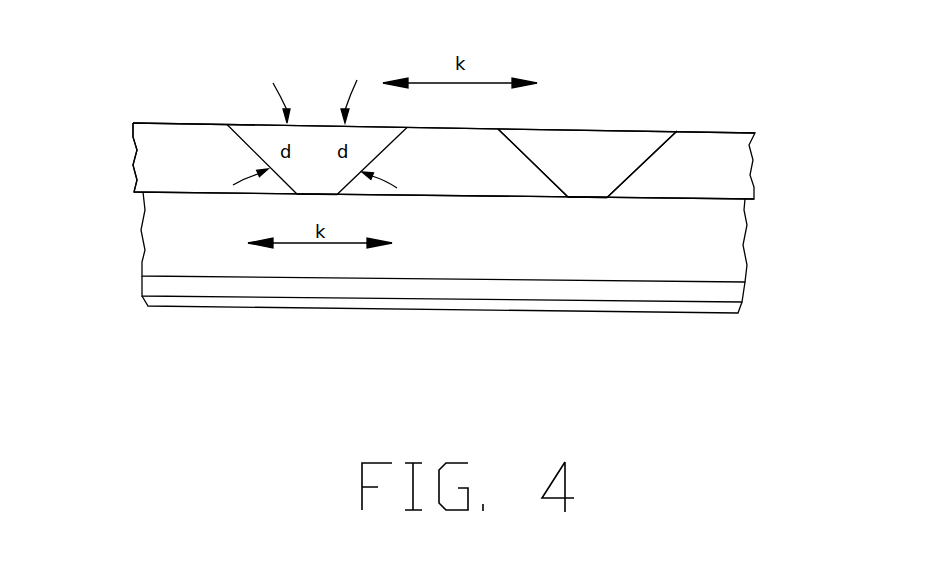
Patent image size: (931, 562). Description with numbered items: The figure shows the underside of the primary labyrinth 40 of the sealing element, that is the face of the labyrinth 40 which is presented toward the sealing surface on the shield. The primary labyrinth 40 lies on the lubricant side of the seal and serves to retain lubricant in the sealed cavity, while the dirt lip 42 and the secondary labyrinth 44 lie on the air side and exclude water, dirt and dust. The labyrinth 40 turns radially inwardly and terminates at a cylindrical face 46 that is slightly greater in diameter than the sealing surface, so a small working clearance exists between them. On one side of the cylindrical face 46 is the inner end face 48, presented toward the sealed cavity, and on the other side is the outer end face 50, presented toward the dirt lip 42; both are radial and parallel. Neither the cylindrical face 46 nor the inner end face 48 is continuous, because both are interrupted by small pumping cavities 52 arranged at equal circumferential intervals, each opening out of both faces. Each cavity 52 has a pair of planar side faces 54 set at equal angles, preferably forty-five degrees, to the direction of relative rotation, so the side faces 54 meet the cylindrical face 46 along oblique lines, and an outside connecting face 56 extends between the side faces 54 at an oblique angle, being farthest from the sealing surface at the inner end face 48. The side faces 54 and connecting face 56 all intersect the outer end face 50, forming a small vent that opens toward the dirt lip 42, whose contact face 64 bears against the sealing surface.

The primary labyrinth 40 is at (733, 172).
The dirt lip 42 is at (702, 240).
The secondary labyrinth 44 is at (720, 308).
The cylindrical face 46 is at (155, 153).
The inner end face 48 is at (184, 123).
The outer end face 50 is at (193, 193).
The cavities 52 is at (315, 142).
The side faces 54 is at (537, 163).
The connecting face 56 is at (605, 150).
The contact face 64 is at (212, 285).